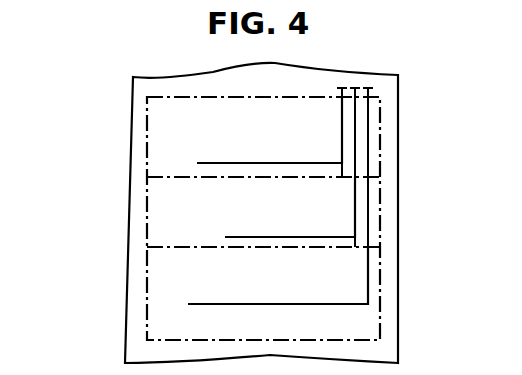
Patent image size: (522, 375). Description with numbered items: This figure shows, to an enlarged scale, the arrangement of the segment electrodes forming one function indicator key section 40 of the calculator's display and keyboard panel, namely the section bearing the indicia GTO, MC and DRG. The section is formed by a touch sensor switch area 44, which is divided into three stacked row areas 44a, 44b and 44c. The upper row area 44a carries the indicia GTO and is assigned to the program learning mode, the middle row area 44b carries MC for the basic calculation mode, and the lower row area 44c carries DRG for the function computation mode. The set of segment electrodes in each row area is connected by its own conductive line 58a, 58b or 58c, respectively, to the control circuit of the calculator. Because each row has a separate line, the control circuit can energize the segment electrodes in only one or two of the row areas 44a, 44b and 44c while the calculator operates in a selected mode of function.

The function indicator key section 40 is at (174, 96).
The touch sensor switch area 44 is at (372, 213).
The first row area 44a is at (147, 148).
The second row area 44b is at (147, 212).
The third row area 44c is at (147, 272).
The first conductive line 58a is at (342, 113).
The second conductive line 58b is at (355, 160).
The third conductive line 58c is at (368, 275).